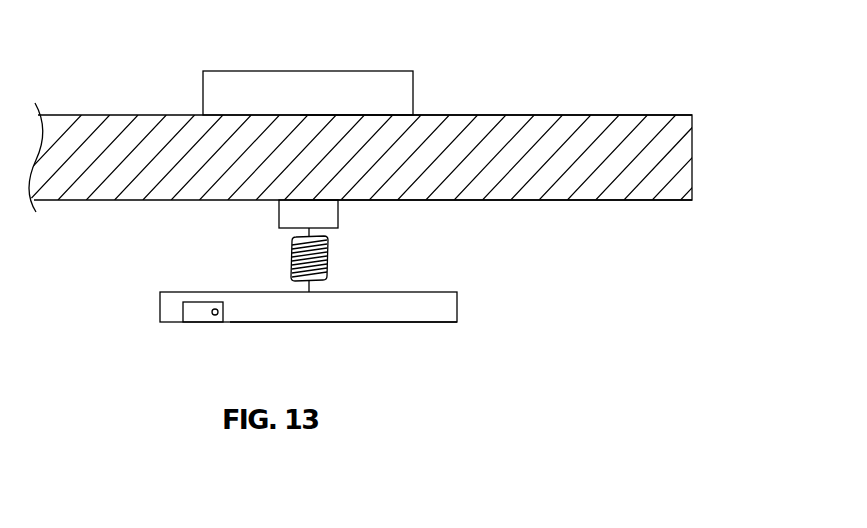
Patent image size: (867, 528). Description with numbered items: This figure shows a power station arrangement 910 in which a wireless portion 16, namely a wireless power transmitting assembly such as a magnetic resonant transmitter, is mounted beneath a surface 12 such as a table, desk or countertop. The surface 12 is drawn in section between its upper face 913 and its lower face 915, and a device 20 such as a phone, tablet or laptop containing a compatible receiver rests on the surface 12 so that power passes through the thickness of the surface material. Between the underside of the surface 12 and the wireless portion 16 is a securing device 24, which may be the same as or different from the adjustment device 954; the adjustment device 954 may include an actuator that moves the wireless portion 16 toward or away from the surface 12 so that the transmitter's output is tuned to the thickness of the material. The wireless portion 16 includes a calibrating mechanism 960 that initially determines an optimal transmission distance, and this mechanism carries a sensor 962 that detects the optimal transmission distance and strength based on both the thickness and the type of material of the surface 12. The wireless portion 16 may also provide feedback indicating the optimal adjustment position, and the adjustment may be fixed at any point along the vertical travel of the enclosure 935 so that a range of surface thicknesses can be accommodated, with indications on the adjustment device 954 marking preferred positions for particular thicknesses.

The sensor assembly 910 is at (618, 39).
The surface 12 is at (673, 160).
The upper surface of substrate 913 is at (627, 116).
The lower surface of substrate 915 is at (627, 202).
The device 20 is at (397, 97).
The securing device 24 is at (330, 263).
The adjustment device 954 is at (284, 263).
The wireless portion 16 is at (314, 325).
The enclosure 935 is at (307, 323).
The calibrating mechanism 960 is at (192, 312).
The sensor 962 is at (213, 318).